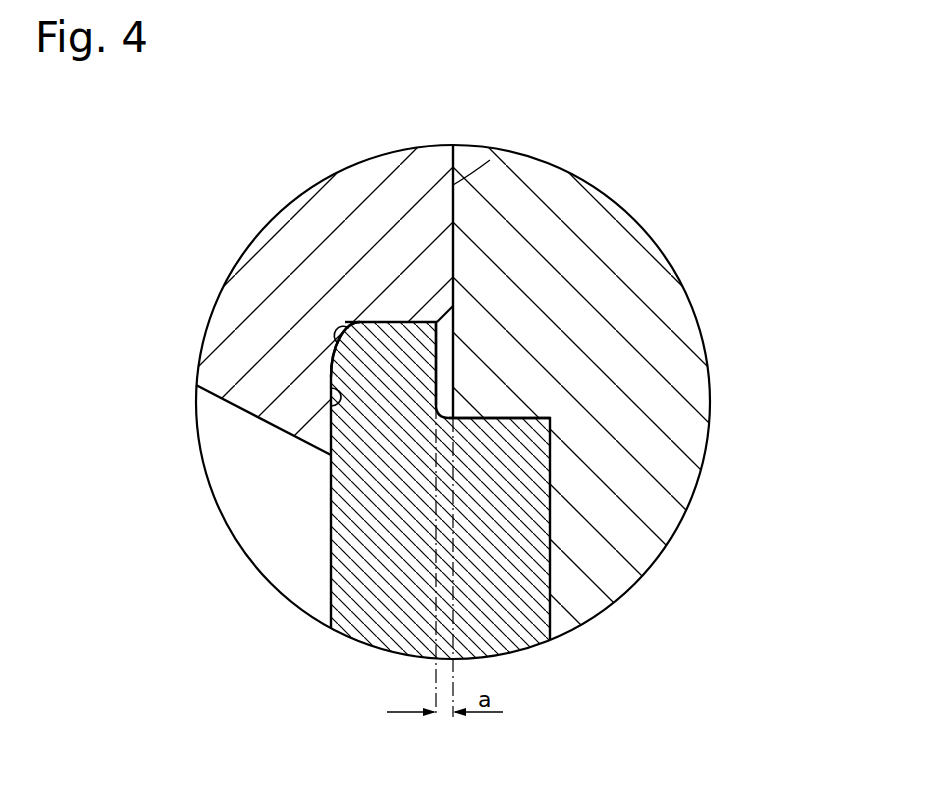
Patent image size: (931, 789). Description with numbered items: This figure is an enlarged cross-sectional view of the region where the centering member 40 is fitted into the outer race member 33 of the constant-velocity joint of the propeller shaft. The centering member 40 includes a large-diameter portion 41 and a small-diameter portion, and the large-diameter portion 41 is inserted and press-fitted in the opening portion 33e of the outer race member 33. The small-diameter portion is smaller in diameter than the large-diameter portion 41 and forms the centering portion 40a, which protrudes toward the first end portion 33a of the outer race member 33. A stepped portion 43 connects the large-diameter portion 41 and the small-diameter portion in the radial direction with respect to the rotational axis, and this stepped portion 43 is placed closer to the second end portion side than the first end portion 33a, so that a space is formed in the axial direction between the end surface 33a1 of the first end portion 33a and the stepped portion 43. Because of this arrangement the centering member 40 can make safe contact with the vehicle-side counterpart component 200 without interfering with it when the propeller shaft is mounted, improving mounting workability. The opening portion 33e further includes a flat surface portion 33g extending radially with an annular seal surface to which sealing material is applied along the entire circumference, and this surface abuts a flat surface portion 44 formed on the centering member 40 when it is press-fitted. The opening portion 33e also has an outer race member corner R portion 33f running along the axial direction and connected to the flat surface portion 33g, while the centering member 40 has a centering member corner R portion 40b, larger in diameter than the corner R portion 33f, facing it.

The outer race member 33 is at (262, 220).
The first end portion 33a is at (427, 167).
The end surface 33a1 is at (490, 160).
The opening portion 33e is at (352, 320).
The outer race member corner R portion 33f is at (340, 335).
The flat surface portion 33g is at (333, 387).
The centering member 40 is at (517, 622).
The centering portion 40a is at (644, 386).
The centering member corner R portion 40b is at (333, 343).
The large-diameter portion 41 is at (437, 322).
The stepped portion 43 is at (437, 347).
The flat surface portion 44 is at (333, 417).
The vehicle-side counterpart component 200 is at (655, 438).